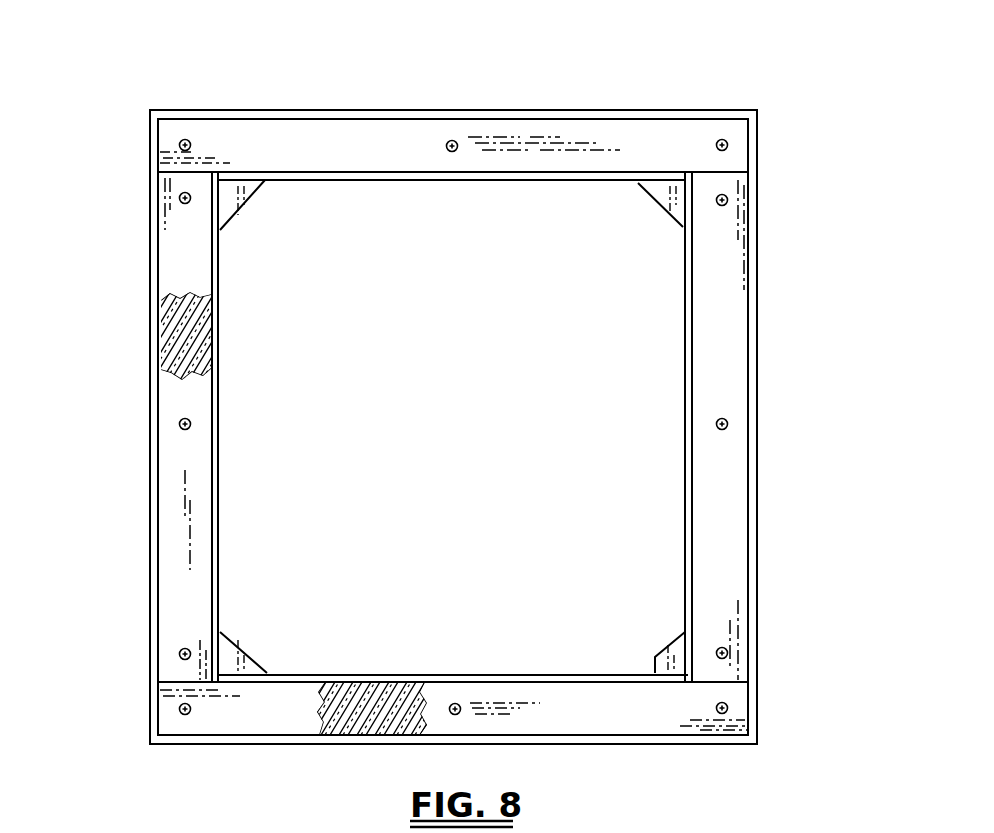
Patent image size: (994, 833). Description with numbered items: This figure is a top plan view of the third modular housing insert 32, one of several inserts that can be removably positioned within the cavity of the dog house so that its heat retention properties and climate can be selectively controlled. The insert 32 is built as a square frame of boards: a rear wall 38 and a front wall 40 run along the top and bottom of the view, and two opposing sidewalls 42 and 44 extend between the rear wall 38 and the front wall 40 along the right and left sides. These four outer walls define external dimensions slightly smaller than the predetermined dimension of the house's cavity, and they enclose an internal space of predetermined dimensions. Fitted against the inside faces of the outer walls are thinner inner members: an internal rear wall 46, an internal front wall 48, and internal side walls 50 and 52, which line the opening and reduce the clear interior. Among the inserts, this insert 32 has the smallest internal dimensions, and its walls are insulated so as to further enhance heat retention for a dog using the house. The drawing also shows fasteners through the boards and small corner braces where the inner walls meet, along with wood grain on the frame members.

The modular housing insert 32 is at (778, 99).
The rear wall 38 is at (615, 110).
The front wall 40 is at (615, 743).
The sidewall 42 is at (757, 297).
The sidewall 44 is at (152, 528).
The internal rear wall 46 is at (282, 175).
The internal front wall 48 is at (297, 677).
The internal side wall 50 is at (690, 493).
The internal side wall 52 is at (213, 405).